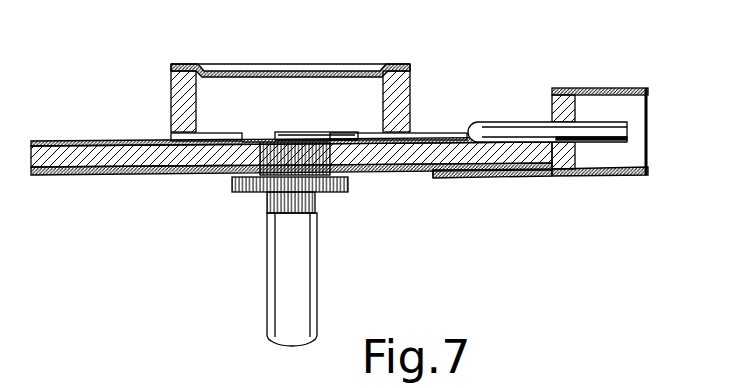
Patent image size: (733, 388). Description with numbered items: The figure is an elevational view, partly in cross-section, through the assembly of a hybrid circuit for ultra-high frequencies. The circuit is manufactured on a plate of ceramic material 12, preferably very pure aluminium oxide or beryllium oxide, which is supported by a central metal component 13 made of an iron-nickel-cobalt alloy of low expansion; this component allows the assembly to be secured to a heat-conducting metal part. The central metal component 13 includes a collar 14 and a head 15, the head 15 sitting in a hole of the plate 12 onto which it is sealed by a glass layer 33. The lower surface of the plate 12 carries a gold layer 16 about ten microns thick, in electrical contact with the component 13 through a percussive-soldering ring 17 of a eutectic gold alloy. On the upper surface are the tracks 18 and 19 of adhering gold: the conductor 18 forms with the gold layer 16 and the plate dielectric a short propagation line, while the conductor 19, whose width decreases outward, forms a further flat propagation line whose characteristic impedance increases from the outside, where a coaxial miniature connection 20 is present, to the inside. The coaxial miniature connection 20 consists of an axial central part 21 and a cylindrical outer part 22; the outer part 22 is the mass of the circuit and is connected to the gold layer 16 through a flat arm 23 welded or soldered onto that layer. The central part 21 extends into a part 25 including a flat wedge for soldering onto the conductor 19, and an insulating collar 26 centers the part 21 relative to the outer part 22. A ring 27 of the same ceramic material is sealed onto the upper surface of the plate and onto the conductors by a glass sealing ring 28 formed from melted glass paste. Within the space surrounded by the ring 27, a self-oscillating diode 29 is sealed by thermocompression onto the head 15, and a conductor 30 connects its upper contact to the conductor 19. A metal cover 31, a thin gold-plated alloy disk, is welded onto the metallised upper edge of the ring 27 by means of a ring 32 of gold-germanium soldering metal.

The plate of ceramic material 12 is at (76, 162).
The central metal component 13 is at (302, 290).
The collar 14 is at (332, 193).
The head 15 is at (282, 158).
The gold layer 16 is at (136, 176).
The percussive-soldering ring 17 is at (348, 176).
The track 18 is at (57, 143).
The track 19 is at (458, 178).
The coaxial miniature connection 20 is at (625, 112).
The axial central part 21 is at (621, 143).
The cylindrical outer part 22 is at (596, 89).
The flat arm 23 is at (515, 178).
The part including a flat wedge 25 is at (510, 124).
The insulating collar 26 is at (583, 176).
The ring of ceramic material 27 is at (182, 97).
The glass sealing ring 28 is at (172, 130).
The self-oscillating diode 29 is at (288, 133).
The conductor 30 is at (323, 133).
The metal cover 31 is at (252, 70).
The ring of gold-germanium soldering metal 32 is at (171, 70).
The glass layer 33 is at (253, 151).